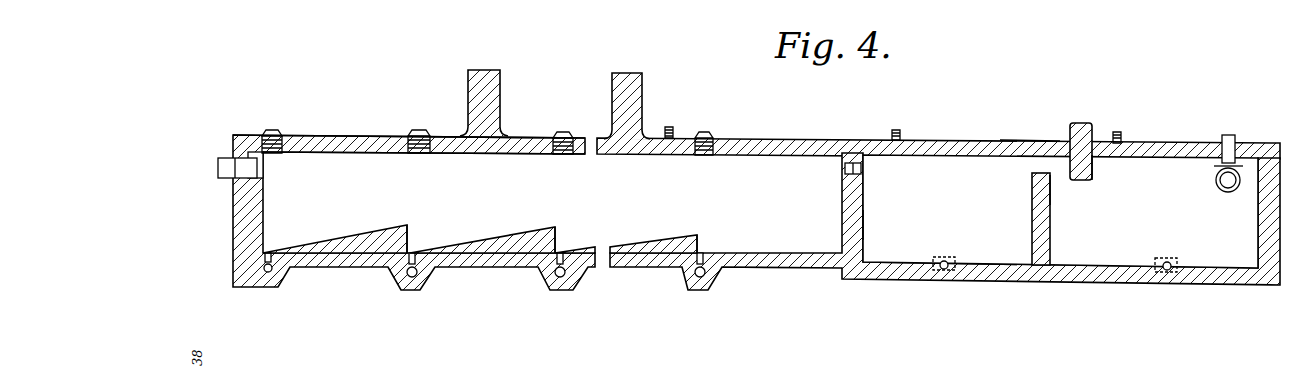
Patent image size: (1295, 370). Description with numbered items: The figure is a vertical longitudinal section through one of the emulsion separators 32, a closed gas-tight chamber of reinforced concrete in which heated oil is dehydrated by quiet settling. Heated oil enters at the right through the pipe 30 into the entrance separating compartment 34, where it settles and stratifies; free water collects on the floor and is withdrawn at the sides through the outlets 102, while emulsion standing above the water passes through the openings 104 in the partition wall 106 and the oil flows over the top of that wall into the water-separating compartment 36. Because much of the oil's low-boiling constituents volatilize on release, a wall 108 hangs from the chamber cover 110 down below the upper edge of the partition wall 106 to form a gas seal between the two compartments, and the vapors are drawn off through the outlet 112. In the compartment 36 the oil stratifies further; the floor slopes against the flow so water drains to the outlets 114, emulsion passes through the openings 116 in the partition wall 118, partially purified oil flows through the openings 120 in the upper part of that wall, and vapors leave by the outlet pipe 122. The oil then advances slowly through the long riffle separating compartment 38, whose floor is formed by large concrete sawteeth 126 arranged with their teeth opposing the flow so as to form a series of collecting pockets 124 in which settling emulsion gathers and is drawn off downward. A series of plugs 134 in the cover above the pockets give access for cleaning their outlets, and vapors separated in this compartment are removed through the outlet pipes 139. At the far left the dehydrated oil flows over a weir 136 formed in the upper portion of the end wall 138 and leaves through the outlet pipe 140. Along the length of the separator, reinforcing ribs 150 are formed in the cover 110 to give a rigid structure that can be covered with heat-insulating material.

The pipe 30 is at (1237, 140).
The emulsion separator 32 is at (802, 140).
The separating compartment 34 is at (1098, 173).
The water-separating compartment 36 is at (955, 187).
The riffle separating compartment 38 is at (503, 170).
The outlets 102 is at (1173, 280).
The openings 104 is at (1050, 228).
The partition wall 106 is at (1050, 208).
The wall 108 is at (1092, 177).
The chamber cover 110 is at (1022, 140).
The outlet 112 is at (1122, 136).
The outlets 114 is at (958, 272).
The openings 116 is at (863, 224).
The partition wall 118 is at (843, 193).
The openings 120 is at (858, 160).
The outlet pipe 122 is at (901, 131).
The collecting pockets 124 is at (480, 230).
The sawteeth 126 is at (407, 226).
The plugs 134 is at (563, 132).
The weir 136 is at (267, 170).
The end wall 138 is at (237, 220).
The outlet pipes 139 is at (669, 127).
The outlet pipe 140 is at (230, 163).
The reinforcing ribs 150 is at (474, 97).